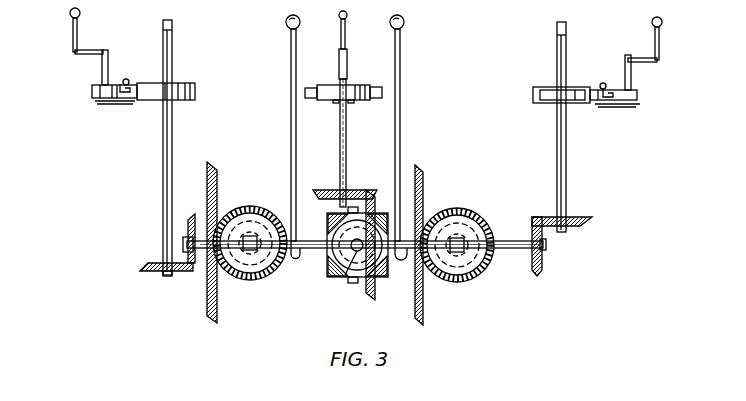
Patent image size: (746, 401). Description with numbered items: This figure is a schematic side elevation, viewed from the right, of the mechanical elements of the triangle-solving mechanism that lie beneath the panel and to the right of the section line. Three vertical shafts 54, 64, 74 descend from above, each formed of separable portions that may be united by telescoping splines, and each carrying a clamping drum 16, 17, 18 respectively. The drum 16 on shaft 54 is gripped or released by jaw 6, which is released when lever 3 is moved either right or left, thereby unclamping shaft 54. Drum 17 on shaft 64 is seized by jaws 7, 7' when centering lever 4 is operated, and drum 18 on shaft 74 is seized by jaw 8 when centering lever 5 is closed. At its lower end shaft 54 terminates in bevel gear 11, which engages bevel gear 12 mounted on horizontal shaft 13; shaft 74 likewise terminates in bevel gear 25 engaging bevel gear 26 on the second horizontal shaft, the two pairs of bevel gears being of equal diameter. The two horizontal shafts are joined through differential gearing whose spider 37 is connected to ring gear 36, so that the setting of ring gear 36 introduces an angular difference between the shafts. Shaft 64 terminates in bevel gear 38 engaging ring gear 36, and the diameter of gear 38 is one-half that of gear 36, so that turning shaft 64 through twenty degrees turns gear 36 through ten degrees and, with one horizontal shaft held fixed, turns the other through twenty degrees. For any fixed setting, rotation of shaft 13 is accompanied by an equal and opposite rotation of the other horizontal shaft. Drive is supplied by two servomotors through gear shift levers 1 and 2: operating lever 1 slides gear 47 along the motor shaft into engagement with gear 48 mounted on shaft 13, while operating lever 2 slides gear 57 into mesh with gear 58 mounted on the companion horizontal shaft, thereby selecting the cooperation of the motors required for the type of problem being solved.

The gear shift lever 1 is at (404, 22).
The gear shift lever 2 is at (286, 22).
The lever 3 is at (662, 21).
The centering lever 4 is at (340, 21).
The centering lever 5 is at (69, 13).
The jaw 6 is at (572, 98).
The jaw 7 is at (352, 81).
The jaw 7' is at (309, 80).
The jaw 8 is at (178, 96).
The bevel gear 11 is at (582, 216).
The bevel gear 12 is at (532, 232).
The horizontal shaft 13 is at (505, 249).
The drum 16 is at (533, 96).
The drum 17 is at (363, 101).
The drum 18 is at (155, 83).
The bevel gear 25 is at (145, 270).
The bevel gear 26 is at (190, 220).
The ring gear 36 is at (377, 283).
The spider 37 is at (350, 277).
The bevel gear 38 is at (336, 190).
The gear 47 is at (466, 283).
The gear 48 is at (423, 306).
The shaft 54 is at (558, 22).
The gear 57 is at (256, 281).
The gear 58 is at (215, 297).
The shaft 64 is at (340, 143).
The shaft 74 is at (172, 22).